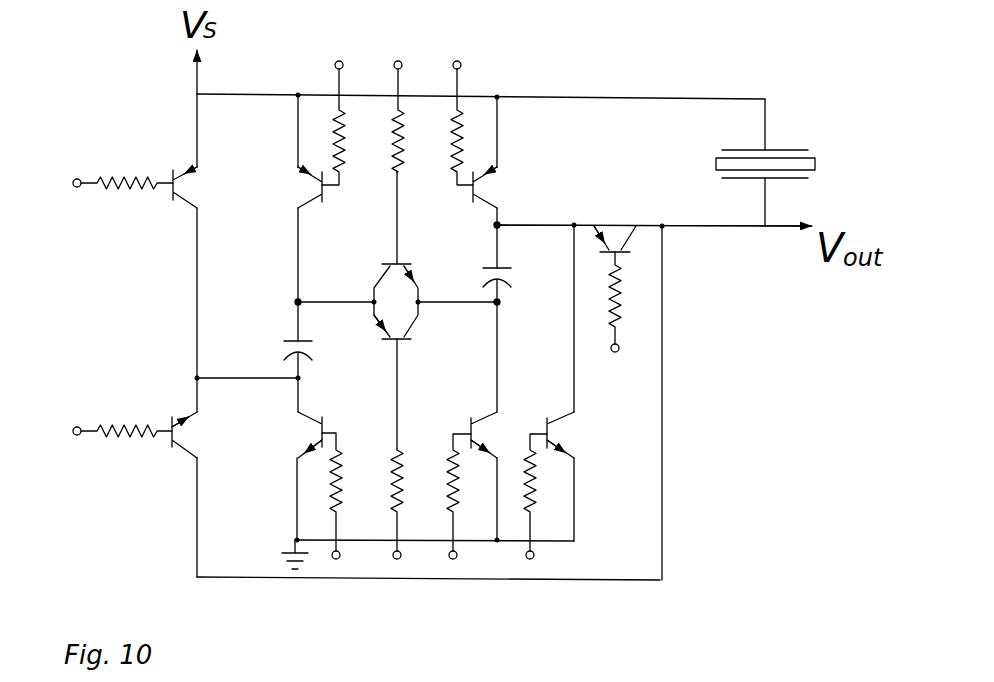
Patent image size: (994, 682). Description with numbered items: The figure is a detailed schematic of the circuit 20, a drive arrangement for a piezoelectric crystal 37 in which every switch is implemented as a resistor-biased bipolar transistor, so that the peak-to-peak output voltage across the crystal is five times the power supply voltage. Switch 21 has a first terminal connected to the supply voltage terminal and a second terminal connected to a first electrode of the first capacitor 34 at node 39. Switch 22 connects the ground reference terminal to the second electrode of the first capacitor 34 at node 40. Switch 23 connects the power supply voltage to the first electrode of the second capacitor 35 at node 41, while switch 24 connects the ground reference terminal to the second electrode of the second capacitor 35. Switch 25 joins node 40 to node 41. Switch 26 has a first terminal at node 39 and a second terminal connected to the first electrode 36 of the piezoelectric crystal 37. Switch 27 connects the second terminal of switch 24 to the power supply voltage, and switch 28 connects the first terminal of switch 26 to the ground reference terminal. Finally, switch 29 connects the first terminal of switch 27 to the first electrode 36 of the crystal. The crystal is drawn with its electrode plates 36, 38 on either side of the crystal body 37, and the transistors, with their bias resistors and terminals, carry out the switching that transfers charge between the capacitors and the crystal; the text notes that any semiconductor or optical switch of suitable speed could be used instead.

The circuit 20 is at (170, 474).
The switch 21 is at (459, 61).
The switch 22 is at (454, 559).
The switch 23 is at (338, 61).
The switch 24 is at (334, 559).
The switch 25 is at (399, 61).
The switch 26 is at (616, 352).
The switch 27 is at (76, 179).
The switch 28 is at (532, 559).
The switch 29 is at (77, 427).
The first capacitor 34 is at (490, 267).
The second capacitor 35 is at (289, 341).
The first electrode 36 is at (790, 180).
The piezoelectric crystal 37 is at (816, 164).
The crystal electrode 38 is at (790, 149).
The node 39 is at (499, 223).
The node 40 is at (499, 304).
The node 41 is at (297, 300).